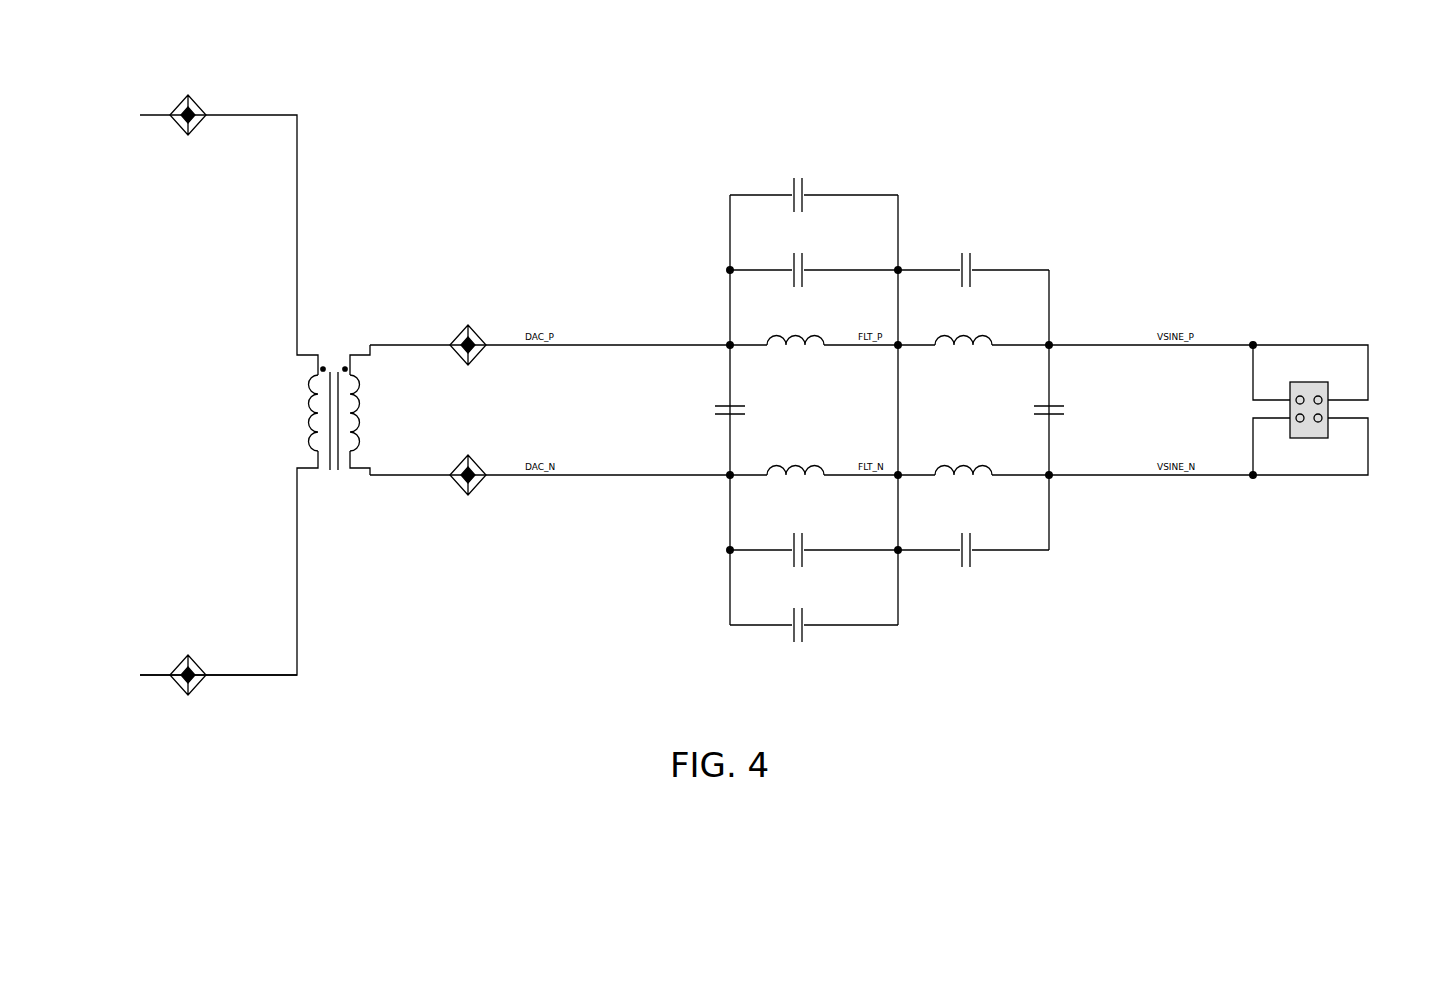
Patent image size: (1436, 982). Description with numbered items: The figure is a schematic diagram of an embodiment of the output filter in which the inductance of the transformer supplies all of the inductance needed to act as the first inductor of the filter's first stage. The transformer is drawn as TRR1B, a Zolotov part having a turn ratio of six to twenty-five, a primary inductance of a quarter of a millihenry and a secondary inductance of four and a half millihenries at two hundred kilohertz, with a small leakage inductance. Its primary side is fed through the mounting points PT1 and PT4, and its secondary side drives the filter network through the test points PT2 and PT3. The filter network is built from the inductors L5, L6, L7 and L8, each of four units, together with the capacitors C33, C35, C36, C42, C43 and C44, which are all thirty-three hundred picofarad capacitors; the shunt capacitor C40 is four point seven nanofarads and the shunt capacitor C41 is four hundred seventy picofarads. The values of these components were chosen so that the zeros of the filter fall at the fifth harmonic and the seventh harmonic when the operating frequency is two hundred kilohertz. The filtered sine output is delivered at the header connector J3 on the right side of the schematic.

The mounting hole TH_3MM PT1 is at (187, 117).
The test point TH_2MM PT2 is at (474, 344).
The test point TH_2MM PT3 is at (470, 474).
The mounting hole TH_3MM PT4 is at (187, 677).
The transformer TMR085 TRR1B is at (335, 416).
The capacitor C33 is at (803, 198).
The capacitor C35 is at (803, 273).
The capacitor C36 is at (971, 273).
The capacitor C40 is at (749, 418).
The capacitor C41 is at (1071, 418).
The capacitor C42 is at (803, 551).
The capacitor C43 is at (971, 551).
The capacitor C44 is at (803, 627).
The inductor L5 is at (795, 345).
The inductor L6 is at (963, 345).
The inductor L7 is at (795, 475).
The inductor L8 is at (963, 475).
The header HDR_2X2_100_TH_V sine out J3 is at (1321, 410).